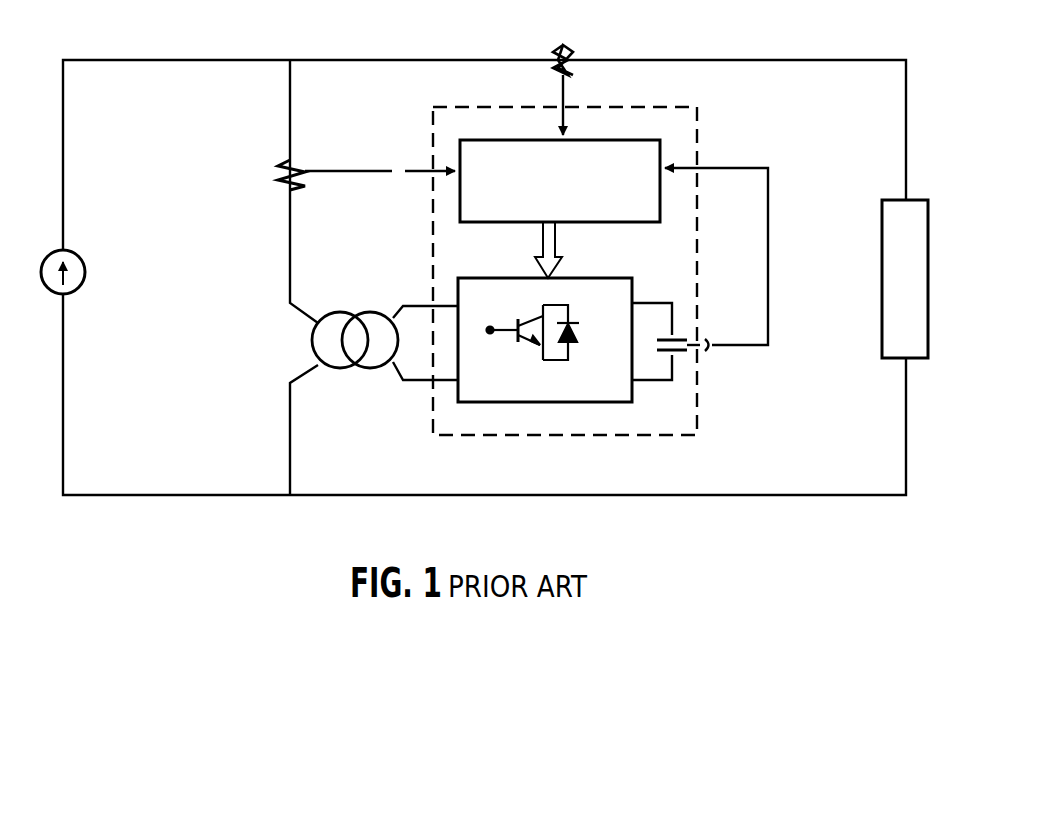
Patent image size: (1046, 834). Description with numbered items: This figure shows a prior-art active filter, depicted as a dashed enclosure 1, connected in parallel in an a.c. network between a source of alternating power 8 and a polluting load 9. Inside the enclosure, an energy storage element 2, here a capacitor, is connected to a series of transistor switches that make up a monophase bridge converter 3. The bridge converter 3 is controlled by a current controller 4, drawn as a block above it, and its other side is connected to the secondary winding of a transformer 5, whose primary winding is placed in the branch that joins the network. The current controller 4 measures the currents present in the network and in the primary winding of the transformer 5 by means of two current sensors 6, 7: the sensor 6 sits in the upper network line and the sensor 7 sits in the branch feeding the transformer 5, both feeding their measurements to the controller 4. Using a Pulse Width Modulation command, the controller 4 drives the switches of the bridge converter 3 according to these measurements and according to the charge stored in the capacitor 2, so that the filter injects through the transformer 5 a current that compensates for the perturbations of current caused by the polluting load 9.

The power supply unit (dashed enclosure) 1 is at (702, 384).
The energy storage element 2 is at (697, 334).
The monophase bridge converter 3 is at (560, 408).
The current controller 4 is at (621, 228).
The transformer 5 is at (358, 298).
The current sensor 6 is at (578, 55).
The current sensor 7 is at (280, 160).
The current source 8 is at (88, 266).
The polluting load 9 is at (882, 258).